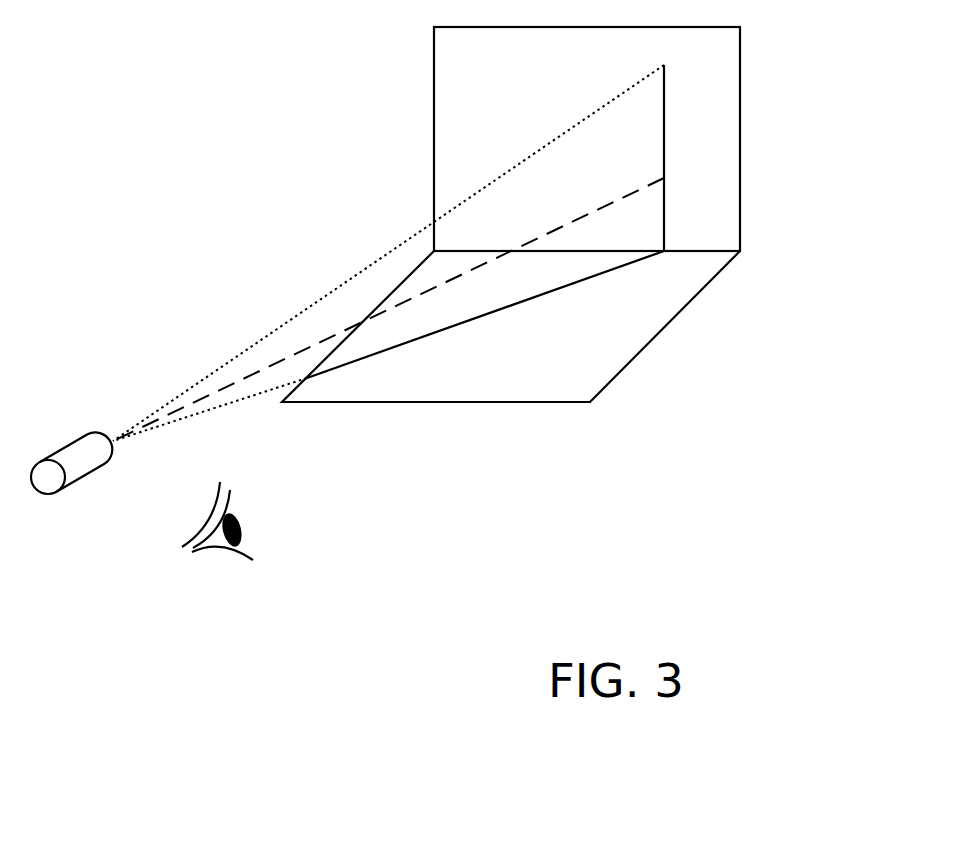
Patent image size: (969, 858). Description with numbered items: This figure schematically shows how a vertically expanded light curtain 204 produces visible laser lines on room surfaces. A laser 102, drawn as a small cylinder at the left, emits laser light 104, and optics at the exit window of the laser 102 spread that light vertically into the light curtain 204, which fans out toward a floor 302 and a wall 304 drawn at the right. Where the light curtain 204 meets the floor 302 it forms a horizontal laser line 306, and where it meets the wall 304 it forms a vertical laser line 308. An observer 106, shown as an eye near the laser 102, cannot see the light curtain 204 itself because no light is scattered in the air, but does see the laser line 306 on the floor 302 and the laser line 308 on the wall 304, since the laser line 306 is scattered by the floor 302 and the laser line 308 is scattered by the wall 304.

The laser 102 is at (85, 475).
The laser light 104 is at (632, 192).
The observer 106 is at (193, 551).
The light curtain 204 is at (402, 248).
The floor 302 is at (537, 402).
The wall 304 is at (740, 102).
The horizontal laser line 306 is at (465, 323).
The vertical laser line 308 is at (664, 158).